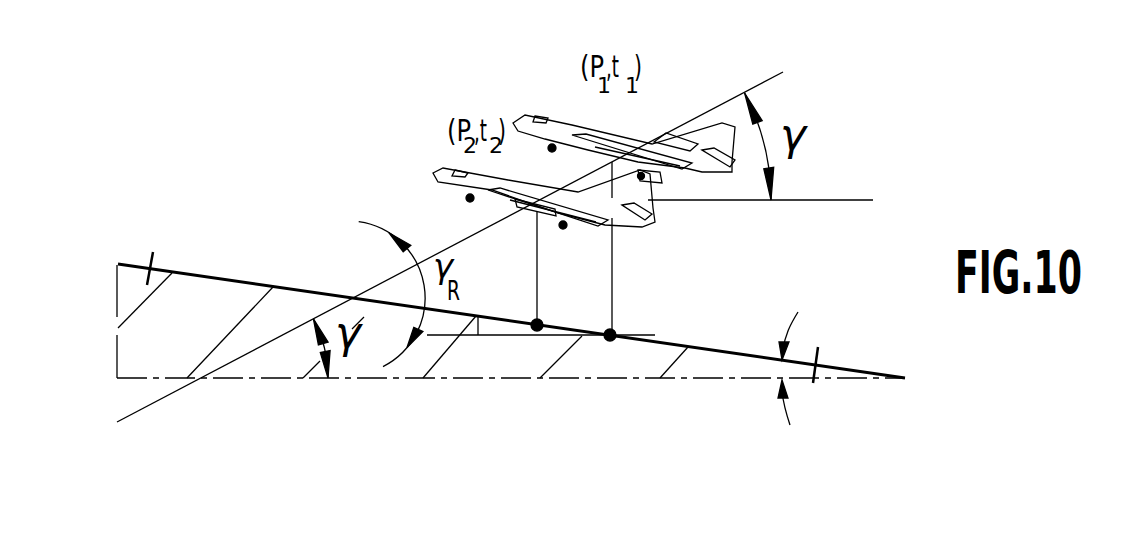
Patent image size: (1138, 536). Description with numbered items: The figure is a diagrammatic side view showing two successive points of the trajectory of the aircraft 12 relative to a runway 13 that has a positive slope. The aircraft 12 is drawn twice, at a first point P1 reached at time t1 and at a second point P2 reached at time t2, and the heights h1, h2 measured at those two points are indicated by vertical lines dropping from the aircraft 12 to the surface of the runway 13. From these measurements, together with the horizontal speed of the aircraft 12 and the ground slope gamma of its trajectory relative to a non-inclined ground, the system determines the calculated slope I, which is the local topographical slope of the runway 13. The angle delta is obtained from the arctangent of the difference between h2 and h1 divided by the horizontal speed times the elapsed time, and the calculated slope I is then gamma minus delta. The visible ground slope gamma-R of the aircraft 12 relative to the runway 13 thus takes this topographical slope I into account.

The aircraft 12 is at (563, 120).
The runway 13 is at (250, 282).
The height measured at point P1 h1 is at (626, 248).
The height measured at point P2 h2 is at (552, 268).
The calculated slope I is at (783, 368).